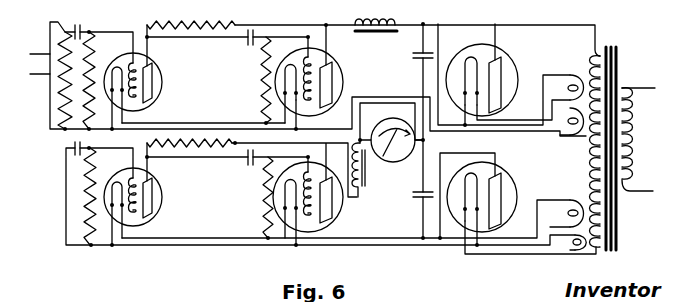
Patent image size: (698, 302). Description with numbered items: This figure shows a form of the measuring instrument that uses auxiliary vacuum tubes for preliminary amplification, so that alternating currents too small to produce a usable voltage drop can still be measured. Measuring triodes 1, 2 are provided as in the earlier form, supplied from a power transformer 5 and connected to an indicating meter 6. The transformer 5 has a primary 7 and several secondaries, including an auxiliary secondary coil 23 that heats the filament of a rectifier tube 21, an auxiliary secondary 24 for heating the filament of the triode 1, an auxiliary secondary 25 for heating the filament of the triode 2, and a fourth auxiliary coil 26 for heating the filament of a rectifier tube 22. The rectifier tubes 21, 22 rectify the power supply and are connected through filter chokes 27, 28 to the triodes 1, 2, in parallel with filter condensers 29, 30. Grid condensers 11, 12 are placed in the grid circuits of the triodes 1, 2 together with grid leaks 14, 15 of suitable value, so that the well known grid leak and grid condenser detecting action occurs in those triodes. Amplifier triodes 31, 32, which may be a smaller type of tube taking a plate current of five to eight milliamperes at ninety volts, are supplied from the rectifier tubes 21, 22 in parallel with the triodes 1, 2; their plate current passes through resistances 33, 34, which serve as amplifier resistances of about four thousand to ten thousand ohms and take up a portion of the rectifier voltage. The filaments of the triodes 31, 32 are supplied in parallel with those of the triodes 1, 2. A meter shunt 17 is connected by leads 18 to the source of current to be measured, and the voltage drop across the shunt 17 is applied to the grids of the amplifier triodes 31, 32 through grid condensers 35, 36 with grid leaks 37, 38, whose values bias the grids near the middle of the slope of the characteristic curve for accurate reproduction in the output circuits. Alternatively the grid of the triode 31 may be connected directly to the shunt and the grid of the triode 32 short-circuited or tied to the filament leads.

The triode 1 is at (338, 63).
The triode 2 is at (327, 171).
The power transformer 5 is at (631, 35).
The indicating meter 6 is at (393, 157).
The primary coil 7 is at (635, 136).
The grid condenser 11 is at (250, 46).
The grid condenser 12 is at (252, 165).
The grid leak 14 is at (263, 196).
The grid leak 15 is at (262, 80).
The meter shunt 17 is at (58, 43).
The input leads 18 is at (33, 67).
The rectifier tube 21 is at (505, 56).
The rectifier tube 22 is at (508, 176).
The auxiliary secondary coil 23 is at (570, 75).
The auxiliary secondary 24 is at (560, 136).
The auxiliary secondary 25 is at (571, 200).
The auxiliary coil 26 is at (580, 243).
The filter choke 27 is at (383, 21).
The filter choke 28 is at (363, 183).
The filter condenser 29 is at (417, 51).
The filter condenser 30 is at (418, 196).
The amplifier triode 31 is at (153, 67).
The amplifier triode 32 is at (153, 190).
The amplifier resistance 33 is at (198, 25).
The amplifier resistance 34 is at (212, 147).
The grid condenser 35 is at (78, 25).
The grid condenser 36 is at (70, 146).
The grid leak 37 is at (92, 48).
The grid leak 38 is at (92, 165).